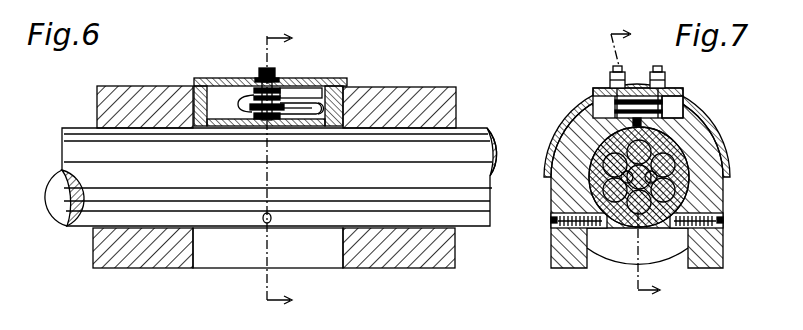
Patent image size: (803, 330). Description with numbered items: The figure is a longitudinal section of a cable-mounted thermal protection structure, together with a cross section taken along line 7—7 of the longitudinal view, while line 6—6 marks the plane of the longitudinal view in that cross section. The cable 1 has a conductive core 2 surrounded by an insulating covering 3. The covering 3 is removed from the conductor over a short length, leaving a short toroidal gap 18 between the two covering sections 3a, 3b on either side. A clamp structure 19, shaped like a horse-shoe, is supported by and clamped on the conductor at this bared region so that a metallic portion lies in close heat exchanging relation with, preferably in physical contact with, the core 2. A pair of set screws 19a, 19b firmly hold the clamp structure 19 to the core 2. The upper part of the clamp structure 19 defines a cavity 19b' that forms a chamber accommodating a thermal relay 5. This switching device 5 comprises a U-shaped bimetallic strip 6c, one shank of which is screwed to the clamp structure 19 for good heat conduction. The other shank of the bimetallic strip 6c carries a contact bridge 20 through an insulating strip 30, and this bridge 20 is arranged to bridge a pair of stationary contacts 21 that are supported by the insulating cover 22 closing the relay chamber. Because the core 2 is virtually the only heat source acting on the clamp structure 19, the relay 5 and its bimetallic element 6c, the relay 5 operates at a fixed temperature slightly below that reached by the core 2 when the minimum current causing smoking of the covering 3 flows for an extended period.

In FIG. 6, the cable 1 is at (57, 98).
In FIG. 7, the cable 1 is at (761, 150).
In FIG. 6, the core 2 is at (494, 138).
In FIG. 7, the core 2 is at (688, 126).
In FIG. 6, the insulating covering 3 is at (133, 86).
In FIG. 6, the covering section 3a is at (135, 268).
In FIG. 6, the covering section 3b is at (426, 88).
In FIG. 6, the thermal relay 5 is at (229, 110).
In FIG. 7, the thermal relay 5 is at (594, 89).
In FIG. 7, the section line 6- 6 is at (633, 162).
In FIG. 6, the U-shaped bimetallic strip 6c is at (320, 105).
In FIG. 6, the section line 7- 7 is at (279, 168).
In FIG. 6, the toroidal gap 18 is at (345, 80).
In FIG. 6, the clamp structure 19 is at (230, 254).
In FIG. 7, the clamp structure 19 is at (726, 192).
In FIG. 7, the set screw 19a is at (551, 224).
In FIG. 7, the set screw 19b is at (725, 235).
In FIG. 6, the cavity 19b' is at (318, 69).
In FIG. 7, the cavity 19b' is at (703, 89).
In FIG. 6, the contact bridge 20 is at (241, 80).
In FIG. 7, the contact bridge 20 is at (600, 100).
In FIG. 6, the stationary contacts 21 is at (276, 79).
In FIG. 7, the stationary contacts 21 is at (658, 68).
In FIG. 6, the insulating cover 22 is at (197, 78).
In FIG. 7, the insulating cover 22 is at (545, 168).
In FIG. 6, the insulating strip 30 is at (224, 80).
In FIG. 7, the insulating strip 30 is at (600, 108).